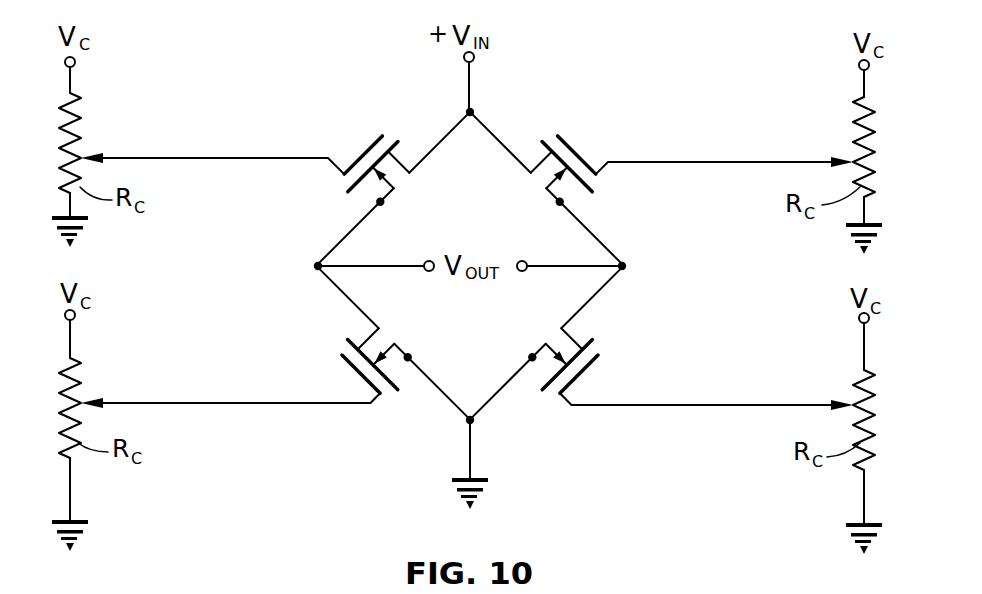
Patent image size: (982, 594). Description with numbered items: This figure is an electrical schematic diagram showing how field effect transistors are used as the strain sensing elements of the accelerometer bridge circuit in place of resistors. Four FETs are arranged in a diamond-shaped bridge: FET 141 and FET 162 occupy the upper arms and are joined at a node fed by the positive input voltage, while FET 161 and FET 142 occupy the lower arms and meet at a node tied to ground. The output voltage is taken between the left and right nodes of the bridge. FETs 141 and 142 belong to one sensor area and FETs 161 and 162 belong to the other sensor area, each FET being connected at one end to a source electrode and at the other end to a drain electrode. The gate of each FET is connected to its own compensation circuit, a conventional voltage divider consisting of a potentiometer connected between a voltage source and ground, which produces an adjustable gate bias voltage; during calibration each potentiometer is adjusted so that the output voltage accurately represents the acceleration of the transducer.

The field effect transistor 141 is at (370, 148).
The field effect transistor 142 is at (584, 369).
The field effect transistor 161 is at (357, 369).
The field effect transistor 162 is at (580, 154).